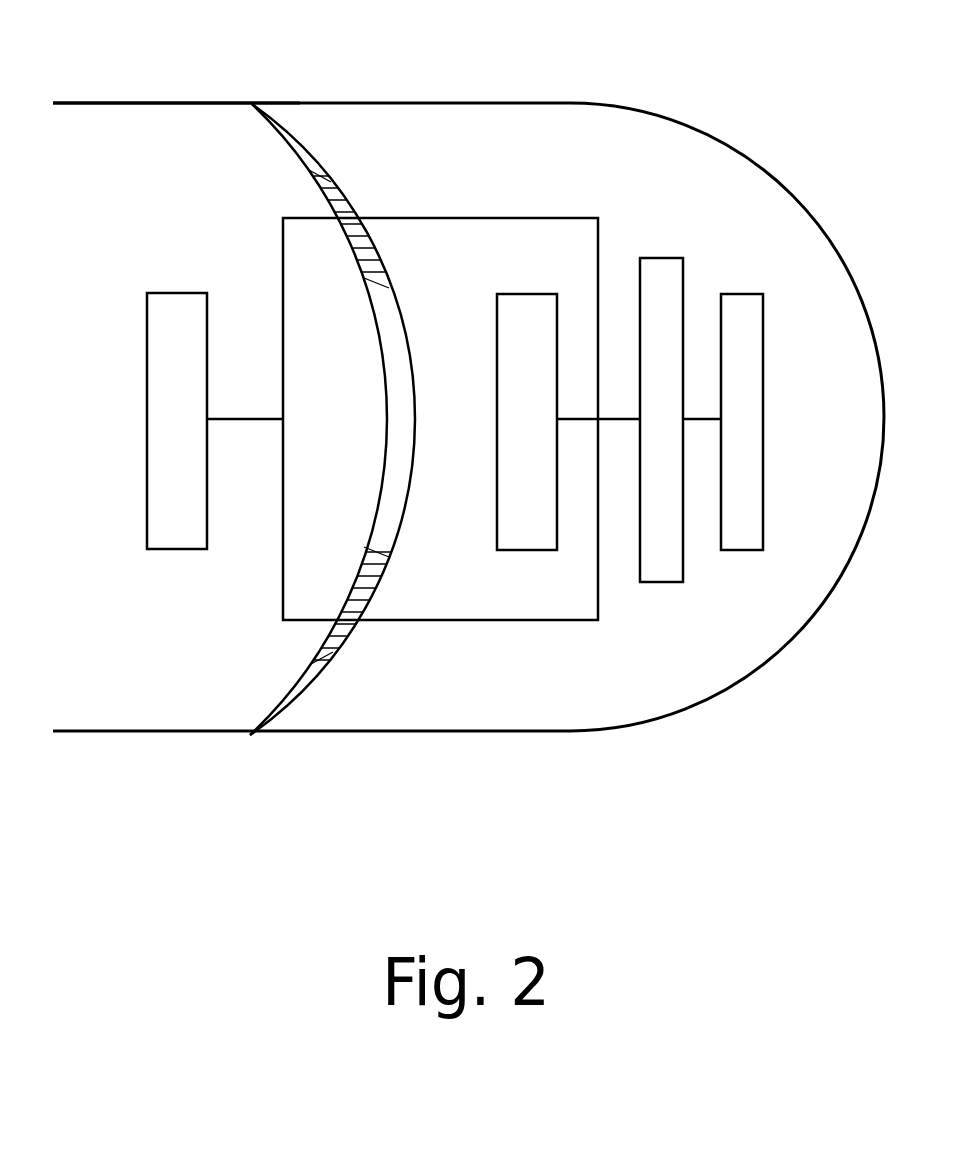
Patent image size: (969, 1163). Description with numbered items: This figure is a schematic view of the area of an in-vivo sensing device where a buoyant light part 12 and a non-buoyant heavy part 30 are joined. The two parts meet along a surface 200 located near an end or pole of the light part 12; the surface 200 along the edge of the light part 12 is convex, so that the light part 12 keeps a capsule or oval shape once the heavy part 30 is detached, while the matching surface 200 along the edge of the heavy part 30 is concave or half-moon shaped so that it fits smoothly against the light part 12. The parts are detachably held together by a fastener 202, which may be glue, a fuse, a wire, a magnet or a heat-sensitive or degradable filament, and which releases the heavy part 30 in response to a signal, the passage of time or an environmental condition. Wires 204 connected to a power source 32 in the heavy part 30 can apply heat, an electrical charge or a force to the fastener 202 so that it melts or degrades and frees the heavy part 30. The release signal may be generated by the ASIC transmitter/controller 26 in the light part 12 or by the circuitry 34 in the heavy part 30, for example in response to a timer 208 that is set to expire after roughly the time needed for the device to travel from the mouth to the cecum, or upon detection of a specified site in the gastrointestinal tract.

The light part 12 is at (97, 130).
The heavy part 30 is at (565, 103).
The surface 200 is at (290, 148).
The fastener 202 is at (353, 197).
The wires 204 is at (478, 620).
The ASIC transmitter/controller 26 is at (168, 549).
The power source 32 is at (527, 294).
The circuitry 34 is at (652, 582).
The timer 208 is at (727, 550).